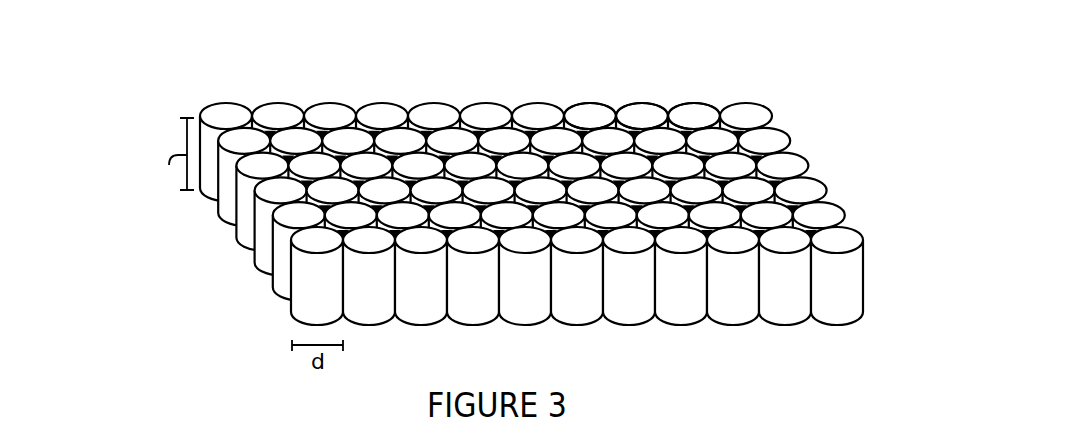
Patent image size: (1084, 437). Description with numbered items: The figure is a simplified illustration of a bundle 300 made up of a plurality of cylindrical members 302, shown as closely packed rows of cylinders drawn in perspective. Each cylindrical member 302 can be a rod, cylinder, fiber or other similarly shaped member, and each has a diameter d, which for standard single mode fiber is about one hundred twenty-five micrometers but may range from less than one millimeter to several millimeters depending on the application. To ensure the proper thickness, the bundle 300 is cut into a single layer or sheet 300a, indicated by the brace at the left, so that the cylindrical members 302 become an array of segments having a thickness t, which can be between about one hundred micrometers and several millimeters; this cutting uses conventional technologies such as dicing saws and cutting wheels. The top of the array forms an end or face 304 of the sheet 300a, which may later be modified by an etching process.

The bundle 300 is at (560, 193).
The sheet 300a is at (155, 93).
The cylindrical member 302 is at (321, 104).
The end or face 304 is at (693, 103).